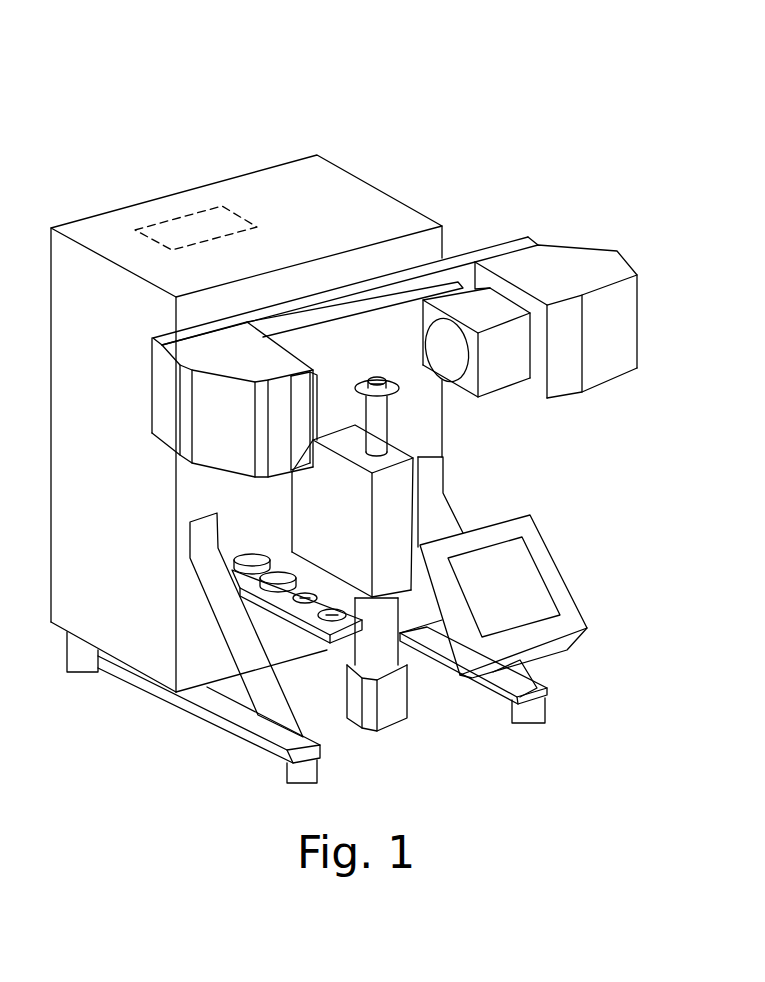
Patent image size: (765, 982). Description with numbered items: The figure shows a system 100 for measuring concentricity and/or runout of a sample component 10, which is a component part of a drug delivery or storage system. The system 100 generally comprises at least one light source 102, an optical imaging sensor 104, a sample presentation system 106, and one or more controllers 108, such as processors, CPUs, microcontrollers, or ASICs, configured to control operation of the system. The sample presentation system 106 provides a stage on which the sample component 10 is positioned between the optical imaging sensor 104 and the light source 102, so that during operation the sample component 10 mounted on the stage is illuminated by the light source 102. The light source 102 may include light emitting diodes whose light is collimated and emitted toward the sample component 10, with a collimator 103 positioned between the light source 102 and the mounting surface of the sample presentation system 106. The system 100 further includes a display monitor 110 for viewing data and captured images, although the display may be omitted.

The system 100 is at (197, 93).
The controller 108 is at (180, 232).
The optical imaging sensor 104 is at (283, 442).
The sample presentation system 106 is at (443, 380).
The light source 102 is at (565, 272).
The collimator 103 is at (507, 367).
The sample component 10 is at (357, 388).
The display monitor 110 is at (510, 603).